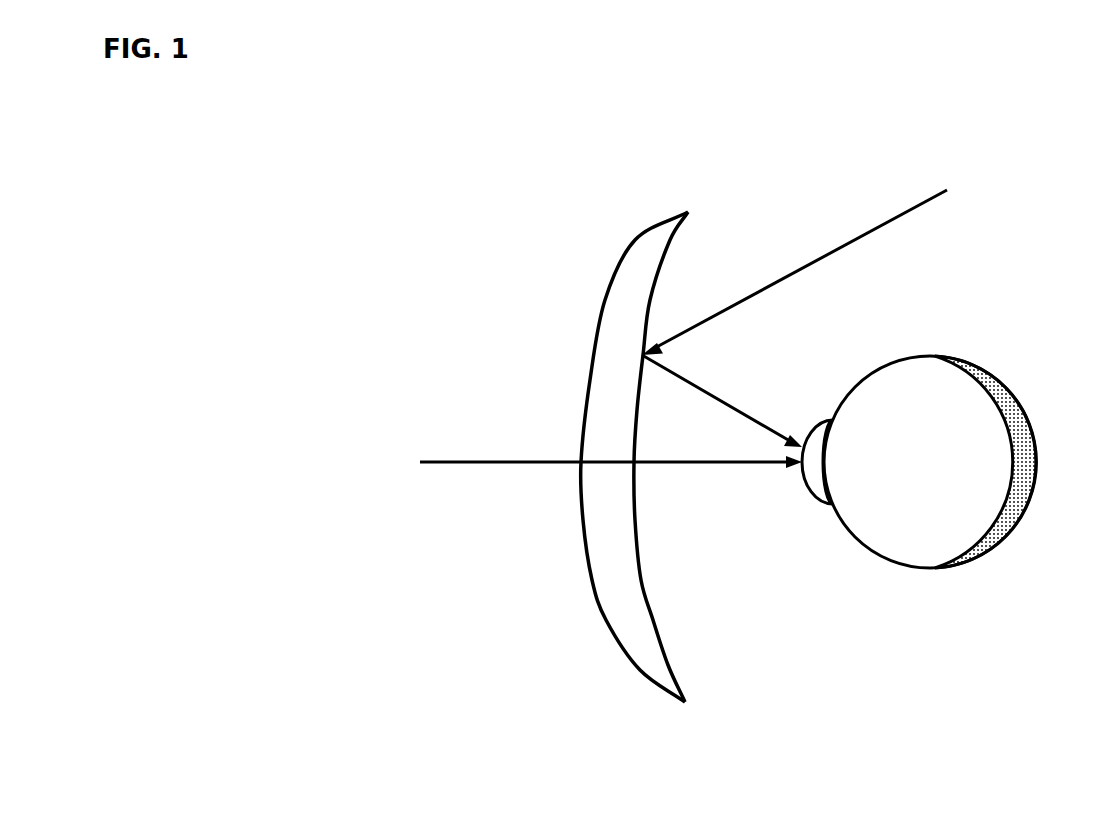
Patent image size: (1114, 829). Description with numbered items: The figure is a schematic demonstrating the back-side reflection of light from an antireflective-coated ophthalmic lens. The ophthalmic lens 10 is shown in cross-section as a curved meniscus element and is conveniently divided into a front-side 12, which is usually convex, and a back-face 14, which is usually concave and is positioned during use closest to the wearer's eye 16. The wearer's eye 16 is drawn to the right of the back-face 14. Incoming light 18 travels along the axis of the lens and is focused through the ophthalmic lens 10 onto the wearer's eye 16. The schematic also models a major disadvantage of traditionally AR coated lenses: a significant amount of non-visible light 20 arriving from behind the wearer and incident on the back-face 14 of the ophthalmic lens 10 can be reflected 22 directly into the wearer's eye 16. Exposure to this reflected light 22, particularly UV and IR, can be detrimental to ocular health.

The ophthalmic lens 10 is at (638, 406).
The front-side 12 is at (612, 268).
The back-face 14 is at (668, 652).
The wearer's eye 16 is at (1030, 425).
The incoming light 18 is at (486, 452).
The non-visible light 20 is at (935, 202).
The reflected light 22 is at (720, 395).